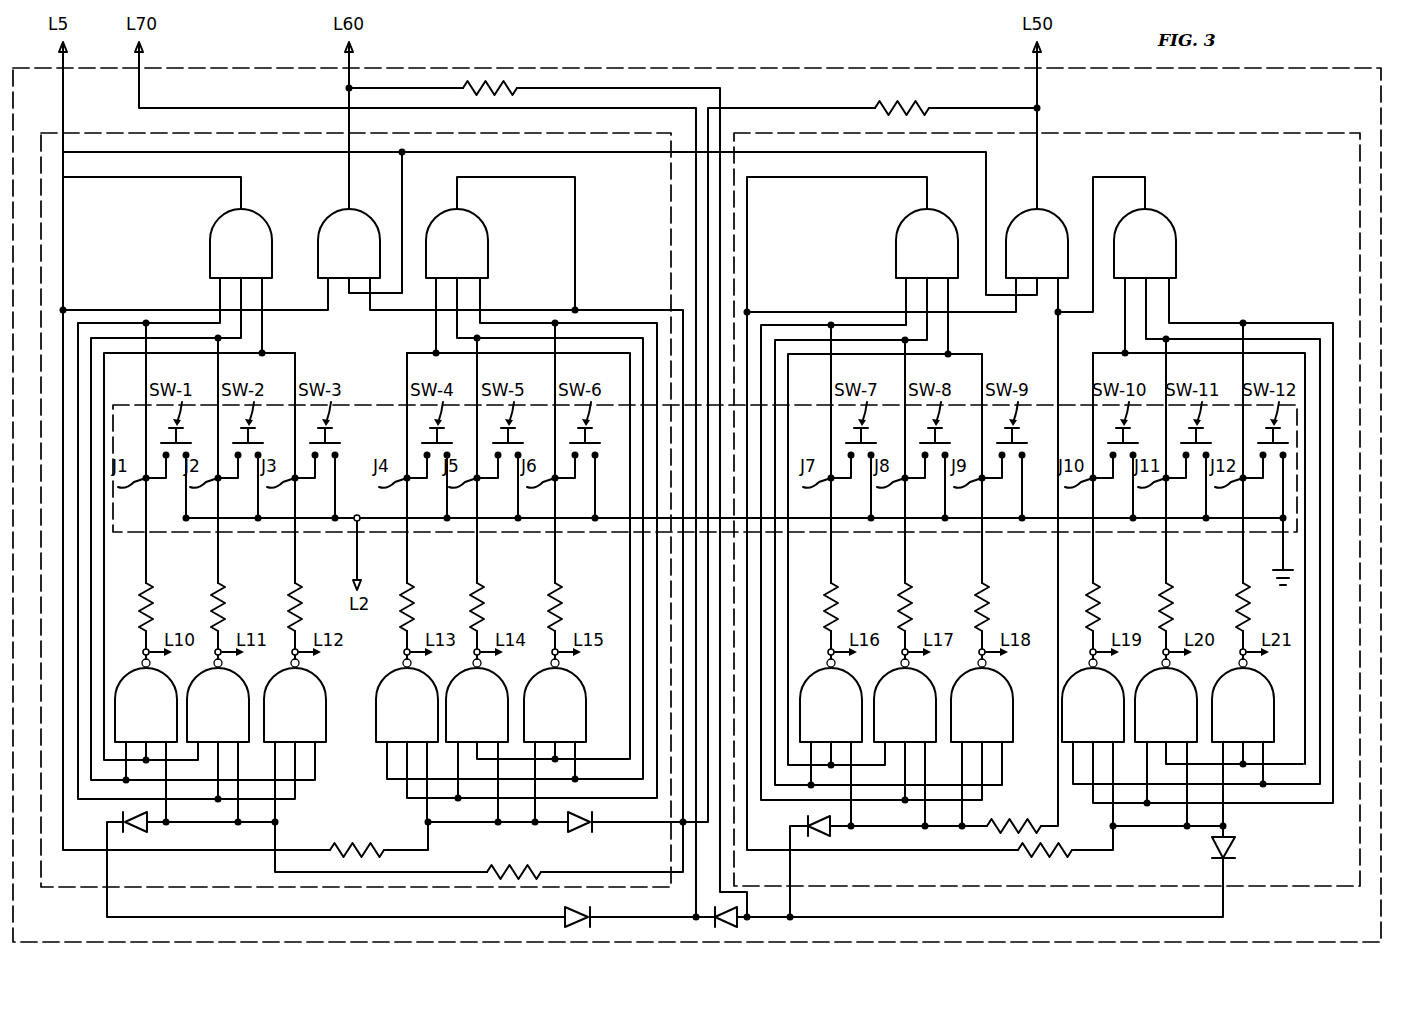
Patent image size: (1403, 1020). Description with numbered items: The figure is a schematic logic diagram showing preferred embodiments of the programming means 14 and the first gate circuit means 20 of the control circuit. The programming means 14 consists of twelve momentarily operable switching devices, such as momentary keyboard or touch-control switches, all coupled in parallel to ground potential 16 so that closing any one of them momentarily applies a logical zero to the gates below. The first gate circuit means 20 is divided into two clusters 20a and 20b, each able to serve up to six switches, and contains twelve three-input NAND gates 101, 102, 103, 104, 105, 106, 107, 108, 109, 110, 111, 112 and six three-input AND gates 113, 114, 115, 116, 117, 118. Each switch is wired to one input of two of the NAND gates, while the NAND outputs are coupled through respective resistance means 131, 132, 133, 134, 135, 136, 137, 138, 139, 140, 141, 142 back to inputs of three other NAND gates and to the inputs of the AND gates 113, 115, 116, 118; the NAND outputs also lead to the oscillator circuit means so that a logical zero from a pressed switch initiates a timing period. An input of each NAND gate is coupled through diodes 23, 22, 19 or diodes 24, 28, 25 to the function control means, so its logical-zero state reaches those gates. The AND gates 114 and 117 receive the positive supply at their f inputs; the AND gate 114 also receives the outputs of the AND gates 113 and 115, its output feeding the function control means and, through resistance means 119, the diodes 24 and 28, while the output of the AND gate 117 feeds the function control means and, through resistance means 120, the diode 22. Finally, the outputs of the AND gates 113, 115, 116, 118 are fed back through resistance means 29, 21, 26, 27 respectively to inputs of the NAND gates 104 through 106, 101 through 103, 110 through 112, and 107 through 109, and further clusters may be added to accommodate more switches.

The programming means 14 is at (394, 403).
The ground potential 16 is at (1278, 585).
The diode 19 is at (123, 811).
The first gate circuit means 20 is at (716, 68).
The cluster 20a is at (129, 133).
The cluster 20b is at (1222, 133).
The resistance means 21 is at (513, 868).
The diode 22 is at (594, 825).
The diode 23 is at (591, 912).
The diode 24 is at (739, 918).
The diode 25 is at (832, 826).
The resistance means 26 is at (1062, 850).
The resistance means 27 is at (995, 824).
The diode 28 is at (1237, 843).
The resistance means 29 is at (368, 842).
The NAND gate 101 is at (128, 688).
The NAND gate 102 is at (210, 684).
The NAND gate 103 is at (288, 684).
The NAND gate 104 is at (395, 684).
The NAND gate 105 is at (468, 684).
The NAND gate 106 is at (542, 682).
The NAND gate 107 is at (846, 692).
The NAND gate 108 is at (921, 692).
The NAND gate 109 is at (1002, 695).
The NAND gate 110 is at (1111, 692).
The NAND gate 111 is at (1189, 692).
The NAND gate 112 is at (1263, 692).
The AND gate 113 is at (216, 236).
The AND gate 114 is at (321, 236).
The AND gate 115 is at (480, 232).
The AND gate 116 is at (898, 235).
The AND gate 117 is at (1017, 233).
The AND gate 118 is at (1160, 236).
The resistance means 119 is at (484, 79).
The resistance means 120 is at (886, 106).
The resistance means 131 is at (140, 600).
The resistance means 132 is at (213, 597).
The resistance means 133 is at (291, 597).
The resistance means 134 is at (404, 597).
The resistance means 135 is at (473, 597).
The resistance means 136 is at (552, 588).
The resistance means 137 is at (828, 602).
The resistance means 138 is at (897, 610).
The resistance means 139 is at (977, 604).
The resistance means 140 is at (1096, 606).
The resistance means 141 is at (1170, 606).
The resistance means 142 is at (1238, 597).